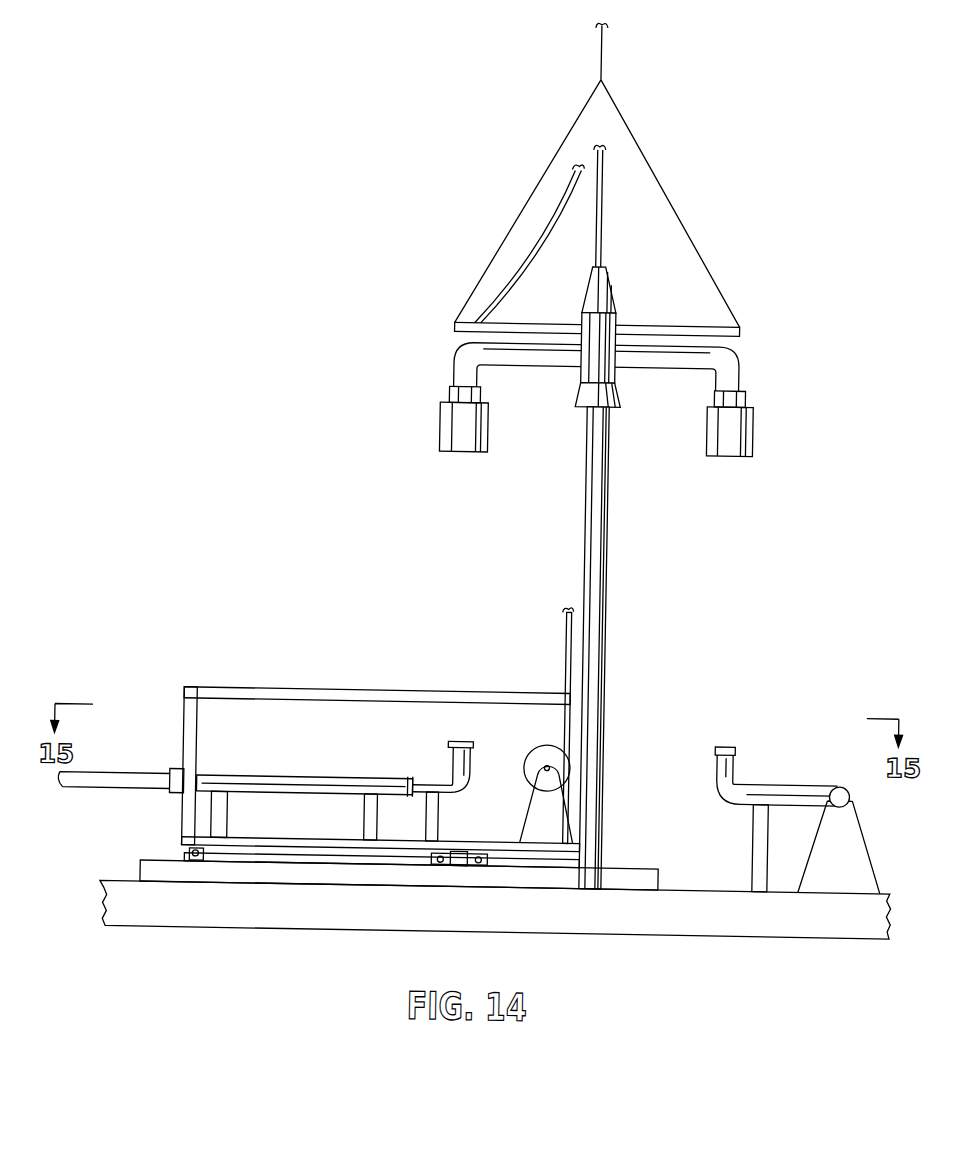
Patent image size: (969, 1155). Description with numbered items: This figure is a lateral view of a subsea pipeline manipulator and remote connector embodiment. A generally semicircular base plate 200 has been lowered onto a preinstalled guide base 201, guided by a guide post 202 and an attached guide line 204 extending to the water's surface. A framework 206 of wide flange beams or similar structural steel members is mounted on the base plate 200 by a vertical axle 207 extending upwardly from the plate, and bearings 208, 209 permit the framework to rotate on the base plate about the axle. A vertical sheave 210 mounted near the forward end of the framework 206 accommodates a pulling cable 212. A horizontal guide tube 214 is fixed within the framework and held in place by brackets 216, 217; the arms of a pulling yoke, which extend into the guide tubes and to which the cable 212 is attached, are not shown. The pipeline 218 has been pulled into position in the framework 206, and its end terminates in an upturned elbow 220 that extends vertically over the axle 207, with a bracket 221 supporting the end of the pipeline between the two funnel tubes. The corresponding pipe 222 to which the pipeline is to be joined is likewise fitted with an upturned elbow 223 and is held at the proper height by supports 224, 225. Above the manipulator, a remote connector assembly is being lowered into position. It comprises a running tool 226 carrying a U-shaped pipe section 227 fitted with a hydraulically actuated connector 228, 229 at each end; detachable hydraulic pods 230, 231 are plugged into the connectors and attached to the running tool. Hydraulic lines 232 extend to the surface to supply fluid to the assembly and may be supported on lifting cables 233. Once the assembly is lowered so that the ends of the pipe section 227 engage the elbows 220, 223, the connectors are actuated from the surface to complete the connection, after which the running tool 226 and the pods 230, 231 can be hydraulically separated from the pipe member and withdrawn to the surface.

The base plate 200 is at (140, 878).
The guide base 201 is at (341, 937).
The guide post 202 is at (603, 529).
The guide line 204 is at (592, 228).
The framework 206 is at (213, 697).
The vertical axle 207 is at (463, 868).
The bearing 208 is at (440, 869).
The bearing 209 is at (185, 869).
The vertical sheave 210 is at (544, 746).
The pulling cable 212 is at (559, 631).
The horizontal guide tube 214 is at (243, 786).
The bracket 216 is at (227, 819).
The bracket 217 is at (365, 815).
The pipeline 218 is at (135, 778).
The upturned elbow 220 is at (446, 761).
The bracket 221 is at (439, 820).
The pipe 222 is at (855, 773).
The upturned elbow 223 is at (735, 763).
The support 224 is at (752, 825).
The support 225 is at (859, 808).
The running tool 226 is at (498, 327).
The U-shaped pipe section 227 is at (596, 371).
The hydraulically actuated connector 228 is at (433, 433).
The hydraulically actuated connector 229 is at (745, 430).
The detachable hydraulic pod 230 is at (442, 396).
The detachable hydraulic pod 231 is at (737, 396).
The hydraulic lines 232 is at (512, 269).
The lifting cables 233 is at (640, 173).